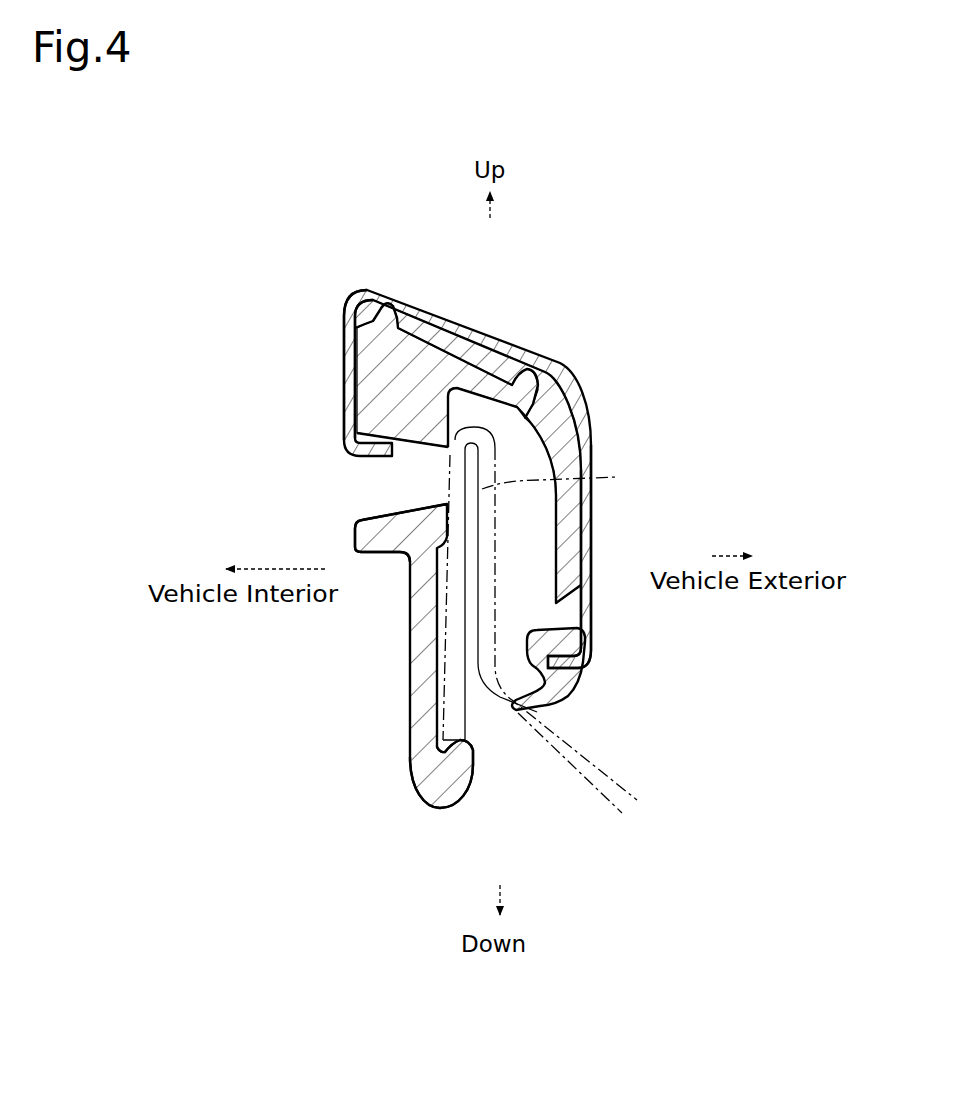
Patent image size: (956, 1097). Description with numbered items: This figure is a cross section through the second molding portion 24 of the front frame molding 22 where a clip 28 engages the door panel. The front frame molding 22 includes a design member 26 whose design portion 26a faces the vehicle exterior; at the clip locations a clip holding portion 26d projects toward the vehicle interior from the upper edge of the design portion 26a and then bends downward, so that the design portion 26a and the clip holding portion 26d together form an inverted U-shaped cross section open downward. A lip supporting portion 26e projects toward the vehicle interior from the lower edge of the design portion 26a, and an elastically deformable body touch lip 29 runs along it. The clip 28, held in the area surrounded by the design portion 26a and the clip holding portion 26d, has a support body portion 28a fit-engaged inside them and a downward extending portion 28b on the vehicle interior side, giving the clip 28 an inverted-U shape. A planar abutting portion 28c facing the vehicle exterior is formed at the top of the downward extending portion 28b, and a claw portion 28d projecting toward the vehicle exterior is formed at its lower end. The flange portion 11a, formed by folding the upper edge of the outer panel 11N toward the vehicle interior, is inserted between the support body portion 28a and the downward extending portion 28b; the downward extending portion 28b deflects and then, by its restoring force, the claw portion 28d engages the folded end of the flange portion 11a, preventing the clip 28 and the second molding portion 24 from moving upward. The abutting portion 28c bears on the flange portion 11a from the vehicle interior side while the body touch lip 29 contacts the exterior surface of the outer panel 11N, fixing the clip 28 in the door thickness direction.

The second molding portion 24 is at (328, 273).
The front frame molding 22 is at (493, 532).
The design member 26 is at (573, 397).
The design portion 26a is at (590, 510).
The clip holding portion 26d is at (343, 374).
The lip supporting portion 26e is at (583, 680).
The clip 28 is at (545, 417).
The support body portion 28a is at (443, 372).
The downward extending portion 28b is at (414, 662).
The abutting portion 28c is at (441, 503).
The claw portion 28d is at (460, 757).
The body touch lip 29 is at (567, 697).
The flange portion 11a is at (593, 480).
The outer panel 11N is at (617, 782).